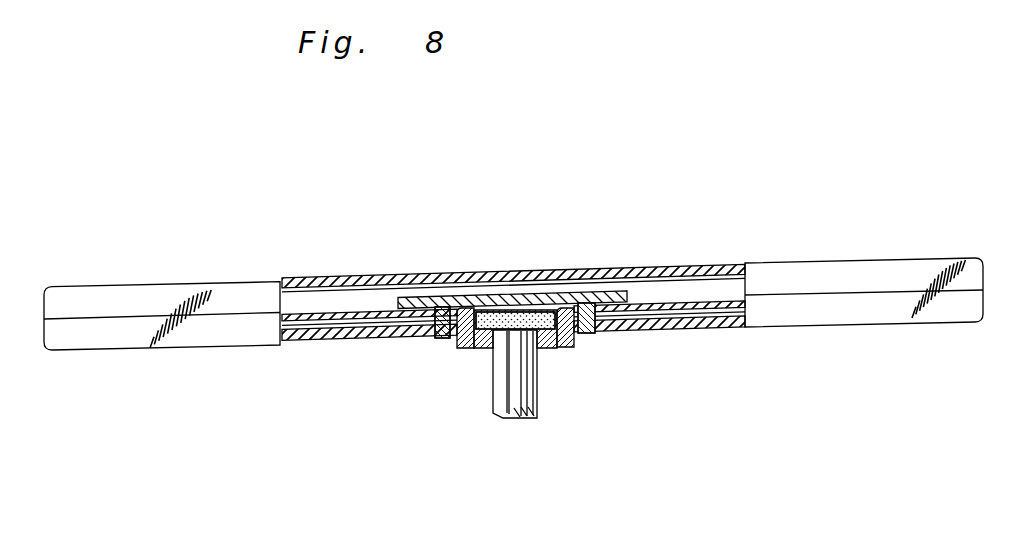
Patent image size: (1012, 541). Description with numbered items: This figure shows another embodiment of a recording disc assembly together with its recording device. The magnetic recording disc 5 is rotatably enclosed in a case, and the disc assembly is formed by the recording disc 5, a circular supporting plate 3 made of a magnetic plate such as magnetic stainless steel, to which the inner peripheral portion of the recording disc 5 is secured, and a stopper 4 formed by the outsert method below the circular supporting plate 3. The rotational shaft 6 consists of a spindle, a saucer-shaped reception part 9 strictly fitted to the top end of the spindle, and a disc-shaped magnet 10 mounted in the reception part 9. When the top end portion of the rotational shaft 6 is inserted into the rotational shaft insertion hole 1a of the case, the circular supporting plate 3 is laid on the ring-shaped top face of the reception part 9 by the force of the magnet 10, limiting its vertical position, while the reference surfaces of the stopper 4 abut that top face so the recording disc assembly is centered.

The rotational shaft insertion hole 1a is at (438, 318).
The circular supporting plate 3 is at (617, 318).
The stopper 4 is at (587, 336).
The recording disc 5 is at (681, 315).
The rotational shaft 6 is at (503, 413).
The reception part 9 is at (566, 312).
The magnet 10 is at (483, 342).